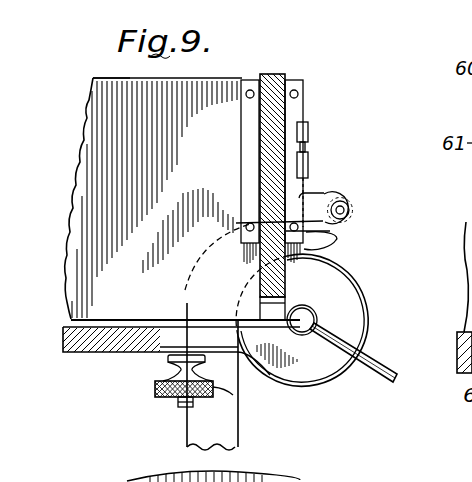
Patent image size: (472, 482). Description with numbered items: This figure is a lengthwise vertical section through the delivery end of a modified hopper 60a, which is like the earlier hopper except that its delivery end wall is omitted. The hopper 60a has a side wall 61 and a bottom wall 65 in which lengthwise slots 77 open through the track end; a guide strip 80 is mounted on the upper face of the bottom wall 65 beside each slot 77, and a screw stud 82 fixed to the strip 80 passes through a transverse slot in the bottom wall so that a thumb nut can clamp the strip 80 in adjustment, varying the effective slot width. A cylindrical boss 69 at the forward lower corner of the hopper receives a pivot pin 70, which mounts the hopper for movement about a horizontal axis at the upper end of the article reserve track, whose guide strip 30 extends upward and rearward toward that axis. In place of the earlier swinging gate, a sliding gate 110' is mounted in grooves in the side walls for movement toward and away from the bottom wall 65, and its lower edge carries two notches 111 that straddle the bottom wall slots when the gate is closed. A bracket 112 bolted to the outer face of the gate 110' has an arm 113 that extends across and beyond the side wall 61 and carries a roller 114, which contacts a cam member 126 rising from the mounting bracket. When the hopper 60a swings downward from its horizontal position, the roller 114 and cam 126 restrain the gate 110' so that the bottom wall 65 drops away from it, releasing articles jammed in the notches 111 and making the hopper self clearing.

The hopper 60a is at (93, 85).
The side wall 61 is at (75, 158).
The gate 110' is at (241, 185).
The notch 111 is at (268, 297).
The bracket 112 is at (305, 154).
The arm 113 is at (327, 192).
The roller 114 is at (356, 219).
The cam member 126 is at (337, 241).
The cylindrical boss 69 is at (348, 300).
The pivot pin 70 is at (318, 318).
The guide strip 30 is at (372, 374).
The guide strip 80 is at (123, 320).
The lengthwise slot 77 is at (200, 369).
The bottom wall 65 is at (110, 353).
The screw stud 82 is at (180, 404).